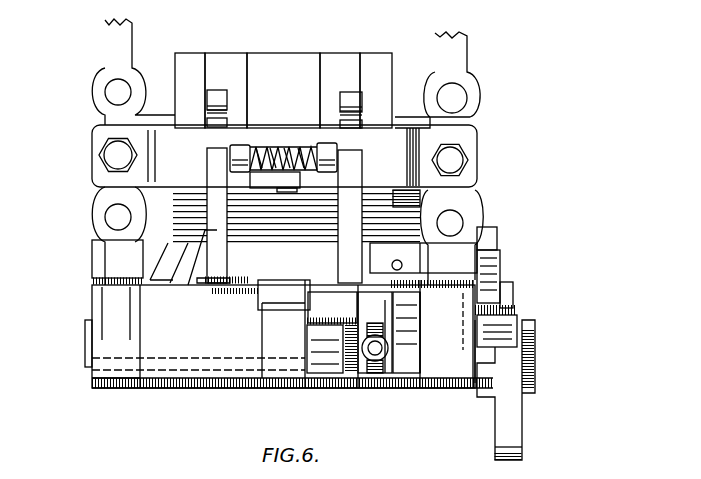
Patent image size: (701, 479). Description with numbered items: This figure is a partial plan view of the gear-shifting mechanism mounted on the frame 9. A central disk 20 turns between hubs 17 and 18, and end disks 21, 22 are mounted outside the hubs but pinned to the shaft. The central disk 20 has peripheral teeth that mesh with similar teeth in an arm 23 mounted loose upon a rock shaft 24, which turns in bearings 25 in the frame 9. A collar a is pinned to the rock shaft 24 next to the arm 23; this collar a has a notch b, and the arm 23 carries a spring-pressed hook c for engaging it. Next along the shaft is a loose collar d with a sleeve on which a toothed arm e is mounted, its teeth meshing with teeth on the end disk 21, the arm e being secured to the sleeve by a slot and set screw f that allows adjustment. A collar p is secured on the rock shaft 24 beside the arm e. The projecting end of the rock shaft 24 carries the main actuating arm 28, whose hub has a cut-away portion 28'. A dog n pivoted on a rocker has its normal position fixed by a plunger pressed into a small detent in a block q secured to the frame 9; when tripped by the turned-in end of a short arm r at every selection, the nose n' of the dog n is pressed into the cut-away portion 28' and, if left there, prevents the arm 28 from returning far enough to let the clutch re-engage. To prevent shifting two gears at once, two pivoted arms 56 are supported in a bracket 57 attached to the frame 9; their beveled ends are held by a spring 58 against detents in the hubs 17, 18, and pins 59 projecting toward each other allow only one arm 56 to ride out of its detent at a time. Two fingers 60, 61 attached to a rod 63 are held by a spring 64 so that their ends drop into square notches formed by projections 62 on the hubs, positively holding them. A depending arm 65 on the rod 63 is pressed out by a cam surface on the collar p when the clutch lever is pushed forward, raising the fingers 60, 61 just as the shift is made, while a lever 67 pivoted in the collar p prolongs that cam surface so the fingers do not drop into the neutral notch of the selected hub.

The frame 9 is at (105, 52).
The end disk 22 is at (192, 52).
The hub 18 is at (232, 52).
The central disk 20 is at (280, 52).
The hub 17 is at (335, 53).
The end disk 21 is at (377, 53).
The projections 62 is at (211, 100).
The bracket 57 is at (417, 147).
The spring 58 is at (263, 145).
The pins 59 is at (290, 145).
The pivoted arms 56 is at (236, 148).
The finger 61 is at (210, 178).
The finger 60 is at (356, 193).
The depending arm 65 is at (398, 250).
The rod 63 is at (92, 268).
The spring 64 is at (187, 282).
The rock shaft 24 is at (85, 335).
The bearings 25 is at (100, 370).
The arm 23 is at (270, 322).
The spring-pressed hook c is at (268, 368).
The notch b is at (330, 328).
The collar a is at (317, 392).
The collar d is at (354, 392).
The toothed arm e is at (378, 392).
The slot and set screw f is at (400, 392).
The collar p is at (408, 392).
The lever 67 is at (415, 318).
The block q is at (495, 240).
The dog n is at (507, 273).
The nose n' is at (510, 284).
The short arm r is at (512, 295).
The cut-away portion 28' is at (527, 326).
The arm 28 is at (518, 390).